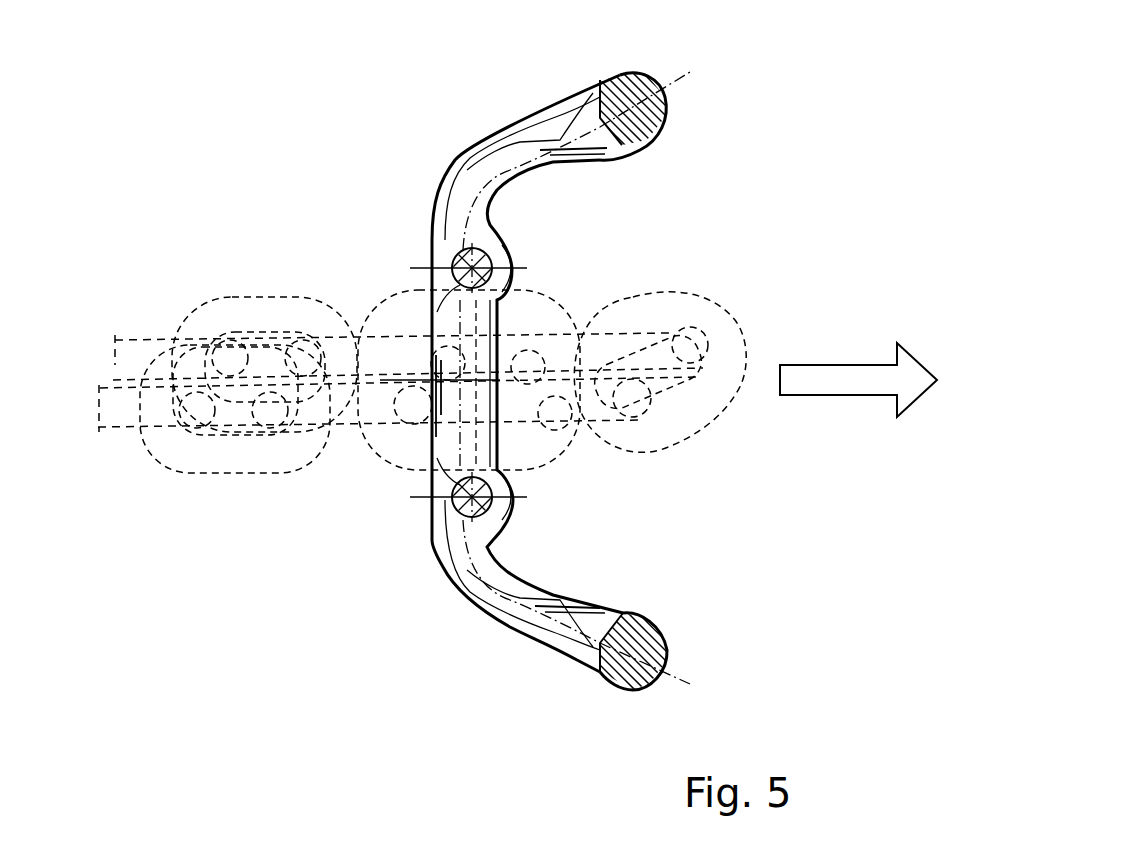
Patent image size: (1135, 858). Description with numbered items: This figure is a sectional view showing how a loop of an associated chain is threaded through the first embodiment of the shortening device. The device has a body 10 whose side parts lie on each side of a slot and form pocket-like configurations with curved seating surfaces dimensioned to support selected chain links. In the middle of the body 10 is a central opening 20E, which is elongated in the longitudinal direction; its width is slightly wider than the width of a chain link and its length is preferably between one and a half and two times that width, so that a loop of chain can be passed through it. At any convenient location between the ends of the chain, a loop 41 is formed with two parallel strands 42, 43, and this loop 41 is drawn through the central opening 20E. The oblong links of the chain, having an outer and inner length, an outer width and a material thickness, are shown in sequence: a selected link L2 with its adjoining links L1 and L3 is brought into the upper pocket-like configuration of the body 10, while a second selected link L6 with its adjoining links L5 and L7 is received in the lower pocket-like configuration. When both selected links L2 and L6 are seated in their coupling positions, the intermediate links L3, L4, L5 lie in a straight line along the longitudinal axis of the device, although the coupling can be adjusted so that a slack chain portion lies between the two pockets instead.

The body 10 is at (425, 140).
The central opening 20E is at (447, 424).
The loop 41 is at (716, 444).
The strand 42 is at (188, 275).
The strand 43 is at (132, 468).
The link L1 is at (380, 337).
The selected link L2 is at (540, 293).
The link L3 is at (593, 330).
The link L4 is at (730, 313).
The link L5 is at (563, 420).
The link L6 is at (393, 460).
The link L7 is at (342, 428).